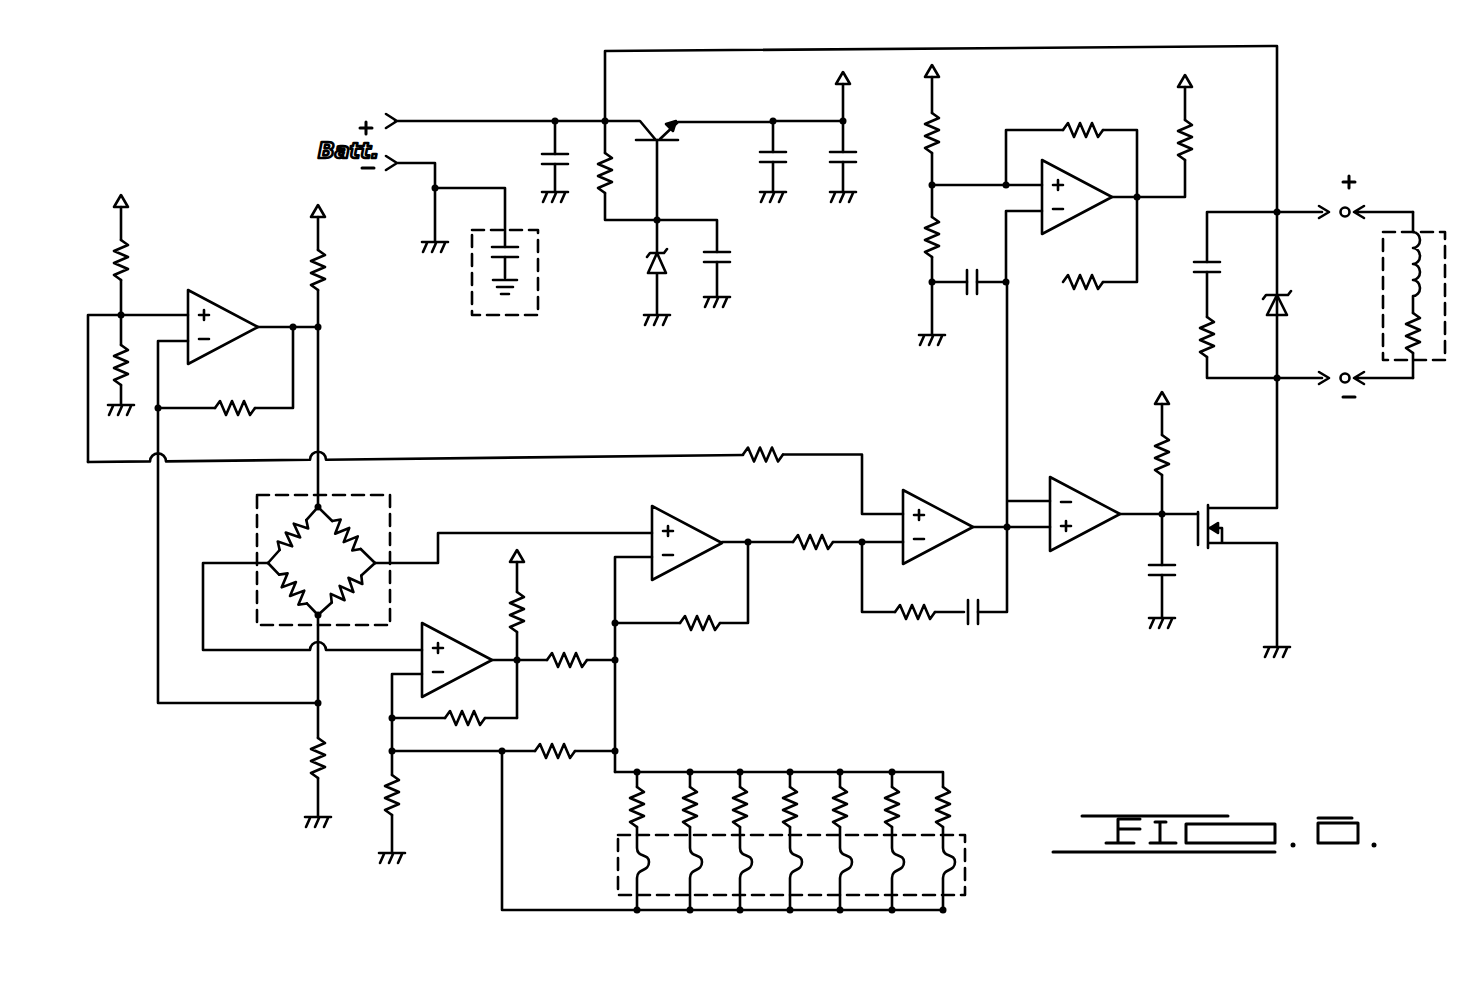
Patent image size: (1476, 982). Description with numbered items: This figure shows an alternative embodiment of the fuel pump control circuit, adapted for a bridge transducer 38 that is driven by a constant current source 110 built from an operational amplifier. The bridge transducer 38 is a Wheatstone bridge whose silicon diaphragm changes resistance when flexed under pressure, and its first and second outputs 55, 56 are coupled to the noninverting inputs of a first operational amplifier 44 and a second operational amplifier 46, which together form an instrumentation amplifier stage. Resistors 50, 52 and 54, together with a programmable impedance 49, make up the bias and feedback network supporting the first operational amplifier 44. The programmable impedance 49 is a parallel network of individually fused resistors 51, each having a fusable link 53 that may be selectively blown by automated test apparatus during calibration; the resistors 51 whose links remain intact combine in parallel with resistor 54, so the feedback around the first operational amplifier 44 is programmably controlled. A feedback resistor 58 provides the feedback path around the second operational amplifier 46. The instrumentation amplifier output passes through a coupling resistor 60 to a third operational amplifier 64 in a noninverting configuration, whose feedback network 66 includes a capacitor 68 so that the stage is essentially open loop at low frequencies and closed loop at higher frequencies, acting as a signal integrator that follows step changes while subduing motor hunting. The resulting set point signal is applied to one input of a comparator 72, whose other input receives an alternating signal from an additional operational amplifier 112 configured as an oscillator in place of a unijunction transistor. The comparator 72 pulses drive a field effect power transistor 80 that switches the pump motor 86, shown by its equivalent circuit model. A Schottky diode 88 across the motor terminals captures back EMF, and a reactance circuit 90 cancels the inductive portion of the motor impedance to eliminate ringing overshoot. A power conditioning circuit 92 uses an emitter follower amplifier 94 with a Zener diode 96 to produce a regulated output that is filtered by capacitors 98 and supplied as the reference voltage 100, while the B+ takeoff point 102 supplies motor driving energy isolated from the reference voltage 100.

The bridge transducer 38 is at (398, 520).
The first operational amplifier 44 is at (465, 647).
The second operational amplifier 46 is at (702, 534).
The programmable impedance 49 is at (932, 770).
The resistor 50 is at (455, 724).
The individually fused resistors 51 is at (737, 800).
The resistor 52 is at (560, 667).
The fusable link 53 is at (690, 872).
The resistor 54 is at (549, 760).
The first output 55 is at (266, 561).
The second output 56 is at (378, 566).
The feedback resistor 58 is at (705, 633).
The coupling resistor 60 is at (807, 551).
The third operational amplifier 64 is at (942, 513).
The feedback network 66 is at (894, 630).
The capacitor 68 is at (974, 626).
The comparator 72 is at (1090, 494).
The field effect power transistor 80 is at (1206, 508).
The pump motor 86 is at (1434, 226).
The Schottky diode 88 is at (1281, 293).
The reactance circuit 90 is at (1185, 350).
The power conditioning circuit 92 is at (704, 312).
The emitter follower amplifier 94 is at (650, 119).
The Zener diode 96 is at (649, 263).
The capacitors 98 is at (847, 140).
The reference voltage 100 is at (928, 68).
The B+ takeoff point 102 is at (605, 66).
The constant current source 110 is at (238, 313).
The operational amplifier 112 is at (1090, 191).